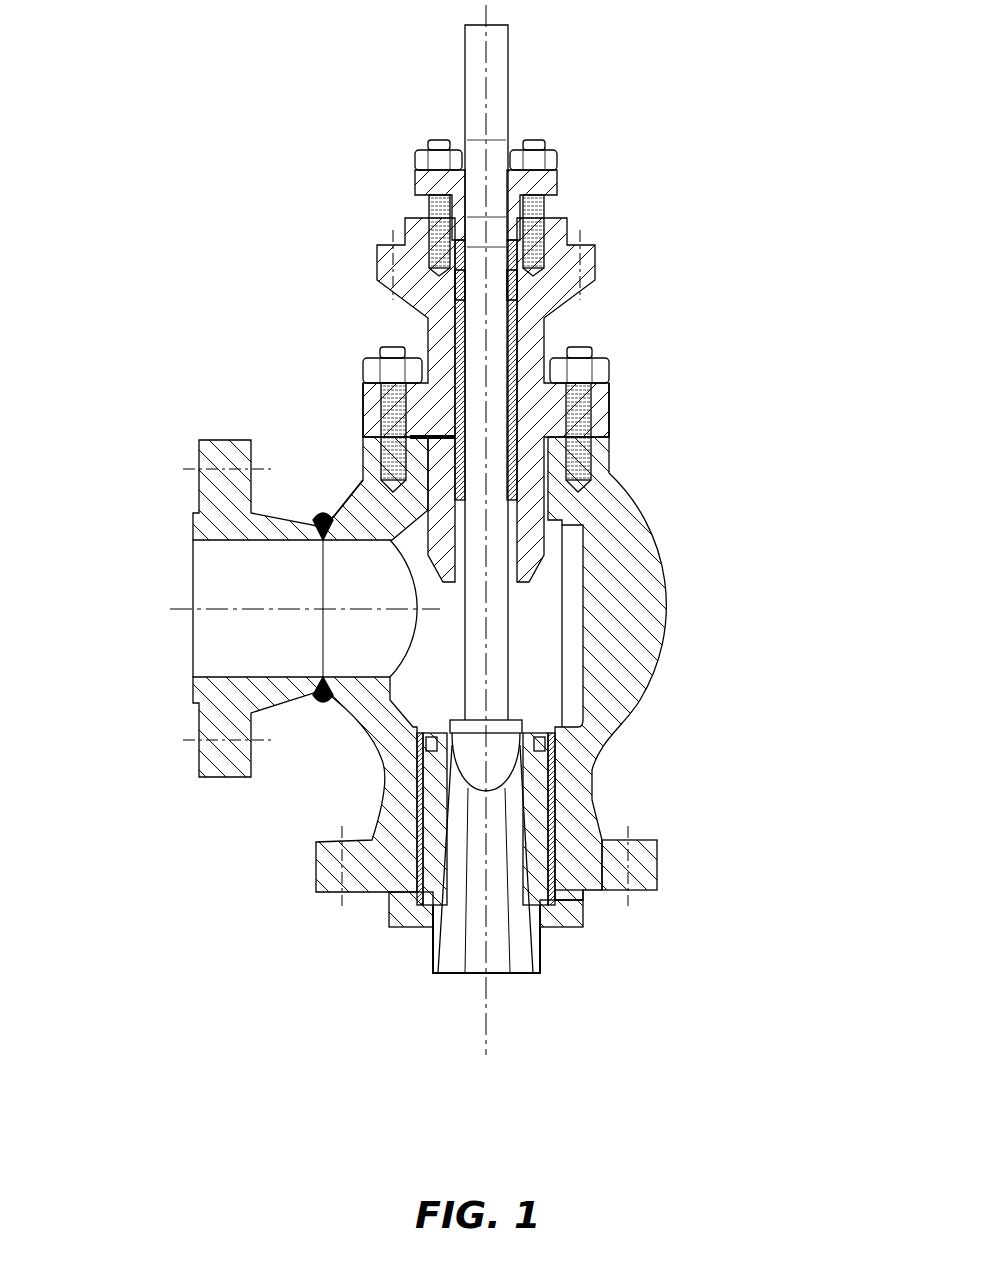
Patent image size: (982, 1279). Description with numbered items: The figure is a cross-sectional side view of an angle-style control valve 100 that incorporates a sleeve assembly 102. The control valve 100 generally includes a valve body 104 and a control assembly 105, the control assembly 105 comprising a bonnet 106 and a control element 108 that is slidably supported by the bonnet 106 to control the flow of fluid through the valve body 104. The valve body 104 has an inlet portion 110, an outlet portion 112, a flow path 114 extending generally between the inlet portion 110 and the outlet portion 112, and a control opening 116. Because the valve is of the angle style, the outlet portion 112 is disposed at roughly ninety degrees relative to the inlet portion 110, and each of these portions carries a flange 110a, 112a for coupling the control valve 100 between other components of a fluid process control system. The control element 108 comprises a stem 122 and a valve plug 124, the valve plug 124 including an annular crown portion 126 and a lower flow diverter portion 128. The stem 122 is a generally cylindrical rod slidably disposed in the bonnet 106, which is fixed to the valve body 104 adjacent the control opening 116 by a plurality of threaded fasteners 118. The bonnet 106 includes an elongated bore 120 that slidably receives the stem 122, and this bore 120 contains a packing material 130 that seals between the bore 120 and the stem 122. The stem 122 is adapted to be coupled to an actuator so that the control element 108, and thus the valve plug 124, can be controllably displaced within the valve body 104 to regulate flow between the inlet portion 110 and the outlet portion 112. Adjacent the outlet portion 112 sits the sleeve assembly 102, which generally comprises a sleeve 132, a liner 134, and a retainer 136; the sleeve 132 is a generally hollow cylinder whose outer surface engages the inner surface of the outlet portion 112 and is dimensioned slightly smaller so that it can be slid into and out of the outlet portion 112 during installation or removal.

The control valve 100 is at (302, 220).
The sleeve assembly 102 is at (567, 936).
The valve body 104 is at (648, 500).
The control assembly 105 is at (629, 405).
The bonnet 106 is at (612, 266).
The control element 108 is at (516, 78).
The inlet portion 110 is at (289, 712).
The flange 110a is at (200, 447).
The outlet portion 112 is at (378, 793).
The flange 112a is at (652, 866).
The flow path 114 is at (457, 666).
The control opening 116 is at (440, 467).
The threaded fasteners 118 is at (372, 362).
The elongated bore 120 is at (508, 324).
The stem 122 is at (473, 70).
The valve plug 124 is at (495, 975).
The annular crown portion 126 is at (519, 738).
The lower flow diverter portion 128 is at (460, 975).
The packing material 130 is at (453, 357).
The sleeve 132 is at (408, 849).
The liner 134 is at (520, 900).
The retainer 136 is at (552, 712).